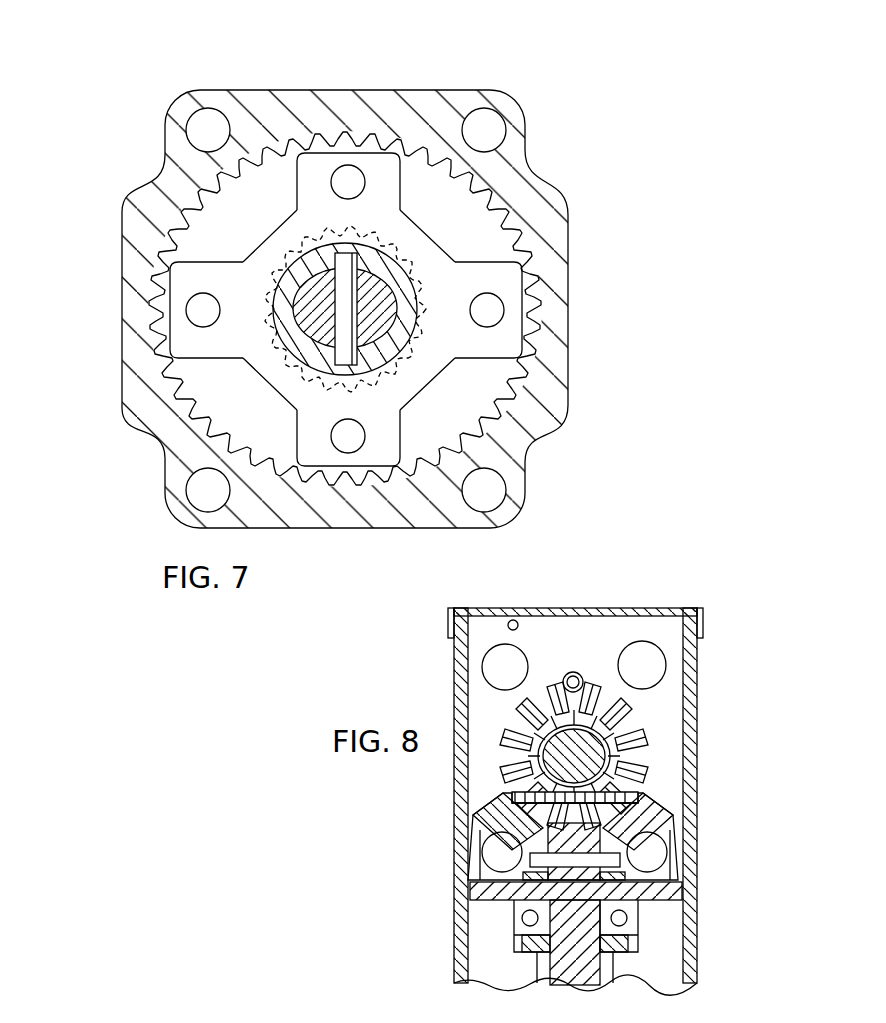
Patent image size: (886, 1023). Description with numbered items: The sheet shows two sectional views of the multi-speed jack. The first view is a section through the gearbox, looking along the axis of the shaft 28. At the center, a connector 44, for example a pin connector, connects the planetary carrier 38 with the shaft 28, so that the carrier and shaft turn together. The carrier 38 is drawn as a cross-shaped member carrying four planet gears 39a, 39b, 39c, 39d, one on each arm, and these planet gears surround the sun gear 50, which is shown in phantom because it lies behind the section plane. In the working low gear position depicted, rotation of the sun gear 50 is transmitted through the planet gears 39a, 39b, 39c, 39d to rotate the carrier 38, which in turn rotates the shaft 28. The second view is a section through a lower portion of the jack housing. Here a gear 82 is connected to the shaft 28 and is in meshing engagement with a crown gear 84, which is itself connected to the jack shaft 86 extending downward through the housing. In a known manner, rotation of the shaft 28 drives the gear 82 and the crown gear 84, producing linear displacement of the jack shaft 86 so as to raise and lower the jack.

In FIG. 7, the shaft 28 is at (370, 293).
In FIG. 8, the shaft 28 is at (587, 750).
In FIG. 7, the planetary carrier 38 is at (378, 148).
In FIG. 7, the planet gear 39a is at (522, 358).
In FIG. 7, the planet gear 39b is at (272, 155).
In FIG. 7, the planet gear 39c is at (197, 358).
In FIG. 7, the planet gear 39d is at (302, 467).
In FIG. 7, the connector 44 is at (300, 233).
In FIG. 7, the sun gear 50 is at (340, 293).
In FIG. 8, the gear 82 is at (591, 696).
In FIG. 8, the crown gear 84 is at (618, 808).
In FIG. 8, the jack shaft 86 is at (580, 962).